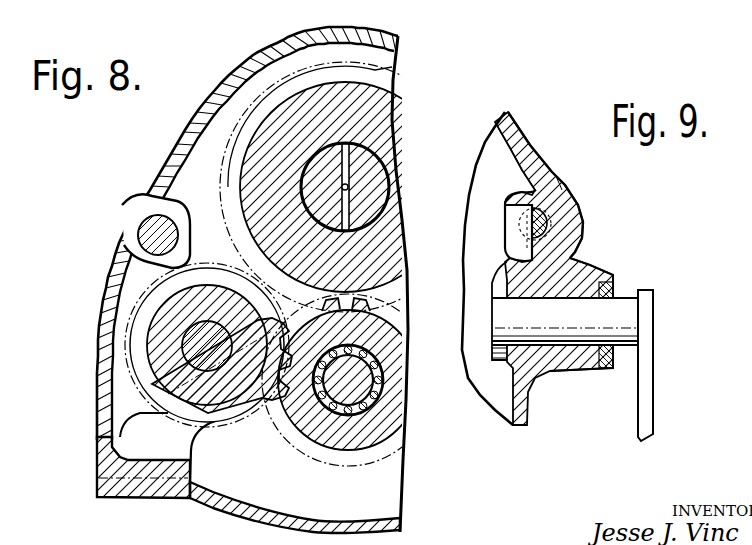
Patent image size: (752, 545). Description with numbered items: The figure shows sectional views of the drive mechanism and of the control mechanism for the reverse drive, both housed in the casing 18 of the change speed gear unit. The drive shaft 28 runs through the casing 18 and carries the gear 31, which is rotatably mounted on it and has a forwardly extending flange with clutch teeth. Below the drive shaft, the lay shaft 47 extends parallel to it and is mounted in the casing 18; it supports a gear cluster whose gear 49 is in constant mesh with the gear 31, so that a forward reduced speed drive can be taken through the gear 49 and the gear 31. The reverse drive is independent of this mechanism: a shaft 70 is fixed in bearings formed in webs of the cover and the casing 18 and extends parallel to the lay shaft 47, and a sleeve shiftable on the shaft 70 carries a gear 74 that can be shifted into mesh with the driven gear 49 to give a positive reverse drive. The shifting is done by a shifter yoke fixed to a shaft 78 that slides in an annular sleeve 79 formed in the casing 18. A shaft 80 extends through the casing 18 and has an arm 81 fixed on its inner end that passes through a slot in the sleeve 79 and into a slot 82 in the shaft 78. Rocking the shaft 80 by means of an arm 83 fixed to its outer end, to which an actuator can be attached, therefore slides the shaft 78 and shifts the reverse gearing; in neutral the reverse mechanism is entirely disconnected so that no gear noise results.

In FIG. 8, the casing 18 is at (266, 50).
In FIG. 9, the casing 18 is at (527, 137).
In FIG. 8, the drive shaft 28 is at (320, 172).
In FIG. 8, the gear 31 is at (247, 175).
In FIG. 8, the annular sleeve 79 is at (172, 212).
In FIG. 9, the annular sleeve 79 is at (518, 193).
In FIG. 8, the shaft 78 is at (167, 238).
In FIG. 9, the shaft 78 is at (558, 222).
In FIG. 8, the shaft 70 is at (200, 360).
In FIG. 8, the gear 74 is at (240, 410).
In FIG. 8, the gear 49 is at (303, 427).
In FIG. 8, the lay shaft 47 is at (337, 393).
In FIG. 9, the slot 82 is at (555, 188).
In FIG. 9, the arm 81 is at (573, 259).
In FIG. 9, the shaft 80 is at (610, 313).
In FIG. 9, the arm 83 is at (645, 393).